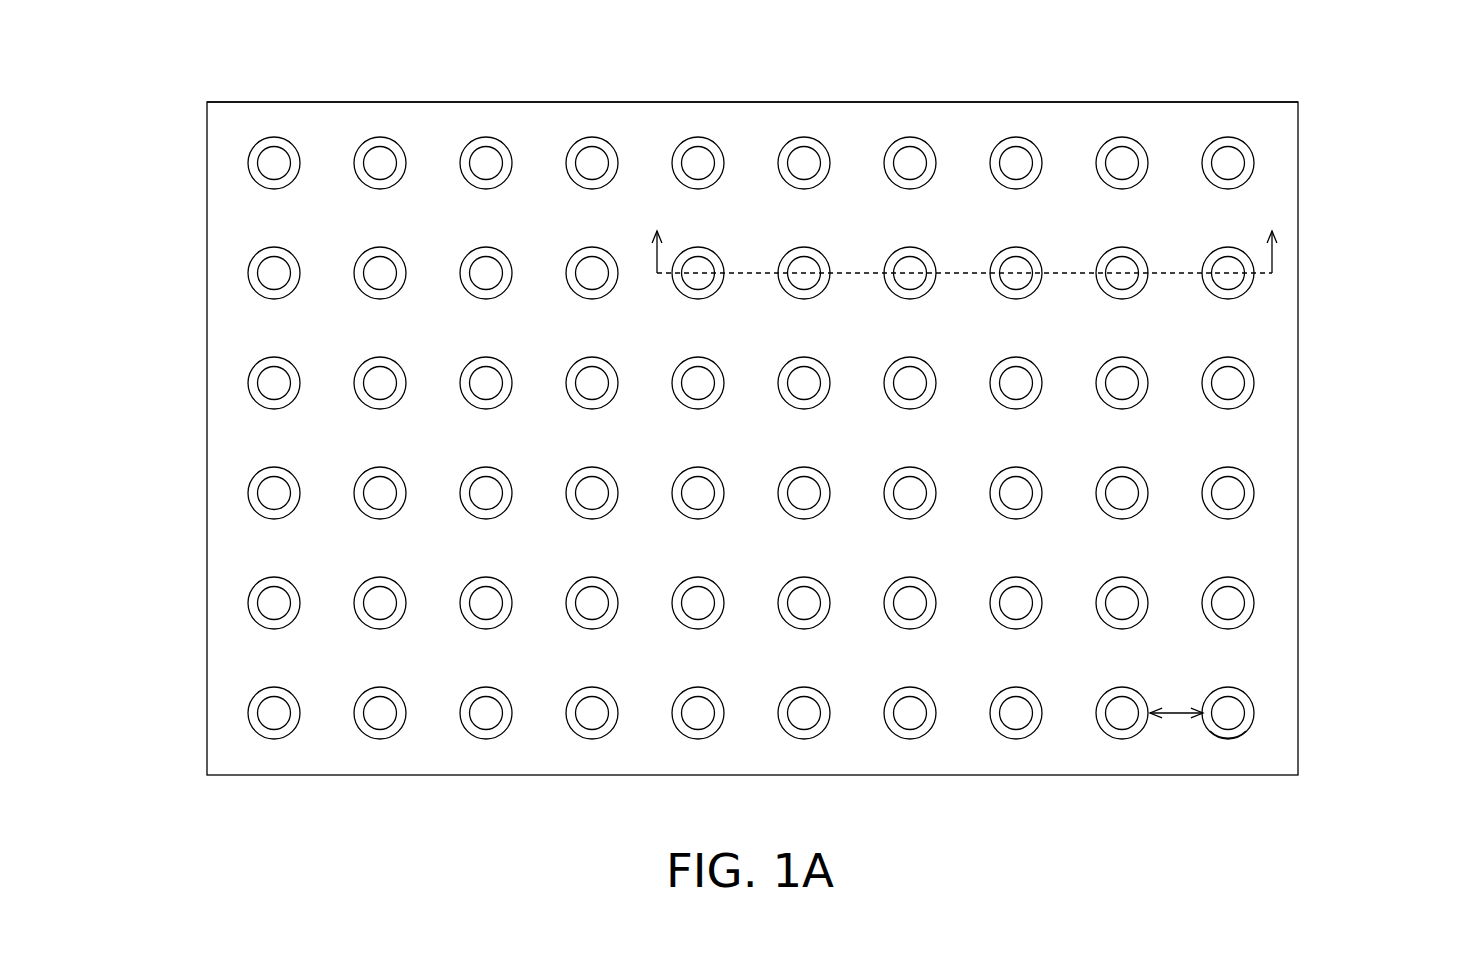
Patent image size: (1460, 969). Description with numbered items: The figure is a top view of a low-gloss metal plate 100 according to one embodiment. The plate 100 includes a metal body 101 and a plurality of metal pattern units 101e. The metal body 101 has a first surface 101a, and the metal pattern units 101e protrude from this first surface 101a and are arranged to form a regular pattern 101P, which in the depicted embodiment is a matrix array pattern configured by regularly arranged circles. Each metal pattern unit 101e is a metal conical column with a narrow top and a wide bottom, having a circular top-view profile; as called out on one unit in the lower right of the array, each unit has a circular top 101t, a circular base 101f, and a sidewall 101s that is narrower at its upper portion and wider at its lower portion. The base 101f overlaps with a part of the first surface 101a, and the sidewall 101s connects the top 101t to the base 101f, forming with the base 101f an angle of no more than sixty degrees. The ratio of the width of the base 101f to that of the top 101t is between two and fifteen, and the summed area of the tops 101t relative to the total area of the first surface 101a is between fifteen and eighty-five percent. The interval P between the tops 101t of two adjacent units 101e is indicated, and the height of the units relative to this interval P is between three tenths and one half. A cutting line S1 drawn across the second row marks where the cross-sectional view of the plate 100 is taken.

The low-gloss metal plate 100 is at (137, 58).
The metal body 101 is at (207, 315).
The regular pattern 101P is at (862, 102).
The first surface 101a is at (966, 750).
The metal pattern unit 101e is at (1324, 702).
The top 101t is at (1232, 709).
The sidewall 101s is at (1252, 711).
The base 101f is at (1294, 749).
The interval P is at (1176, 700).
The cutting line S1 is at (964, 239).